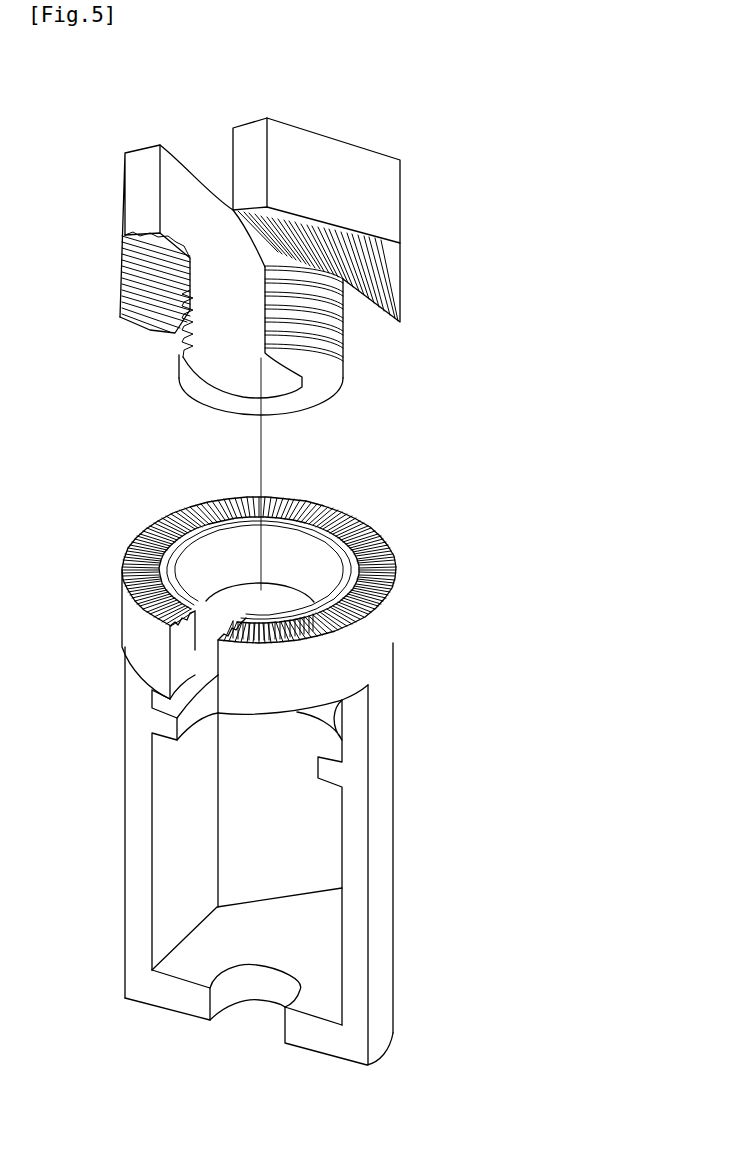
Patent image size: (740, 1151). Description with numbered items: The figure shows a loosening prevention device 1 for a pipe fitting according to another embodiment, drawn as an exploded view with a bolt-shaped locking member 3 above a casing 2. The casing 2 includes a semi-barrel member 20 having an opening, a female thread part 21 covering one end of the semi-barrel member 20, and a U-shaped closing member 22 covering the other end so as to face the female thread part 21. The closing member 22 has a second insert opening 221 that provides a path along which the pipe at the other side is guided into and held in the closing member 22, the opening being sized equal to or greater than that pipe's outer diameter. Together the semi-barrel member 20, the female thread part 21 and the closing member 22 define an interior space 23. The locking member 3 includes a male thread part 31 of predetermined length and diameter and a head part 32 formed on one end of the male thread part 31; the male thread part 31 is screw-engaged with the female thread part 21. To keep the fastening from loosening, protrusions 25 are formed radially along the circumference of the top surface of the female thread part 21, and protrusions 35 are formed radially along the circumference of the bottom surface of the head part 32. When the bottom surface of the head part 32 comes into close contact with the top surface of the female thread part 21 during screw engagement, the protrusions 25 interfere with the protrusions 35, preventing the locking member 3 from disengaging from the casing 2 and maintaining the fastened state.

The loosening prevention device 1 is at (100, 158).
The casing 2 is at (492, 512).
The semi-barrel member 20 is at (360, 858).
The female thread part 21 is at (377, 530).
The closing member 22 is at (317, 1035).
The second insert opening 221 is at (157, 660).
The interior space 23 is at (240, 808).
The protrusions 25 is at (353, 517).
The locking member 3 is at (502, 133).
The male thread part 31 is at (345, 363).
The head part 32 is at (375, 148).
The protrusions 35 is at (123, 320).